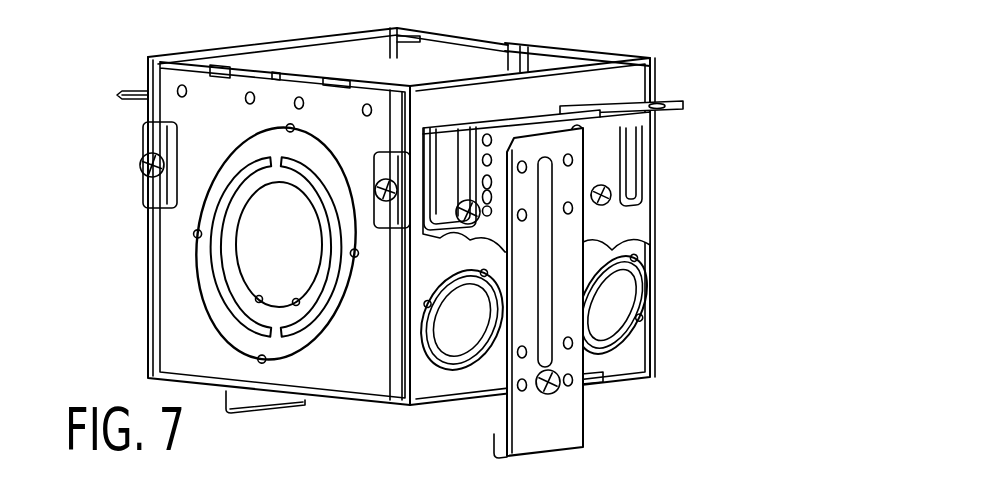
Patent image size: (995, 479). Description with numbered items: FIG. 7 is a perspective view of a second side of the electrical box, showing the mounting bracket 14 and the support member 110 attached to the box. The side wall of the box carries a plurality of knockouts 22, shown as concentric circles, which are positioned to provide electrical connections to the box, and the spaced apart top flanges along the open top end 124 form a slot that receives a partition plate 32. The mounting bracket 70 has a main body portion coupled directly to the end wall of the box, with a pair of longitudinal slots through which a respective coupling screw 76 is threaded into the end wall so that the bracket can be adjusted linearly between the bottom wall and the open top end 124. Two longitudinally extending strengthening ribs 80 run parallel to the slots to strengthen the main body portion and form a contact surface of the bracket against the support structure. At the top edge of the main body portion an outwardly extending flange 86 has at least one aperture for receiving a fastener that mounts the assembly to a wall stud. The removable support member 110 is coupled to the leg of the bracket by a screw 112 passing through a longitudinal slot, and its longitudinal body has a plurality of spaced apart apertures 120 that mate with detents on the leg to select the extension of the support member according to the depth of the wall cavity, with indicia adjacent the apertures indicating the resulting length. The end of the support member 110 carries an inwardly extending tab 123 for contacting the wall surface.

The mounting bracket 14 is at (593, 156).
The knockout 22 is at (196, 278).
The partition plate 32 is at (391, 235).
The mounting bracket 70 is at (642, 203).
The coupling screw 76 is at (466, 223).
The strengthening rib 80 is at (633, 145).
The outwardly extending flange 86 is at (608, 111).
The support member 110 is at (609, 292).
The screw 112 is at (560, 387).
The aperture 120 is at (573, 343).
The tab 123 is at (303, 403).
The open top end 124 is at (533, 63).